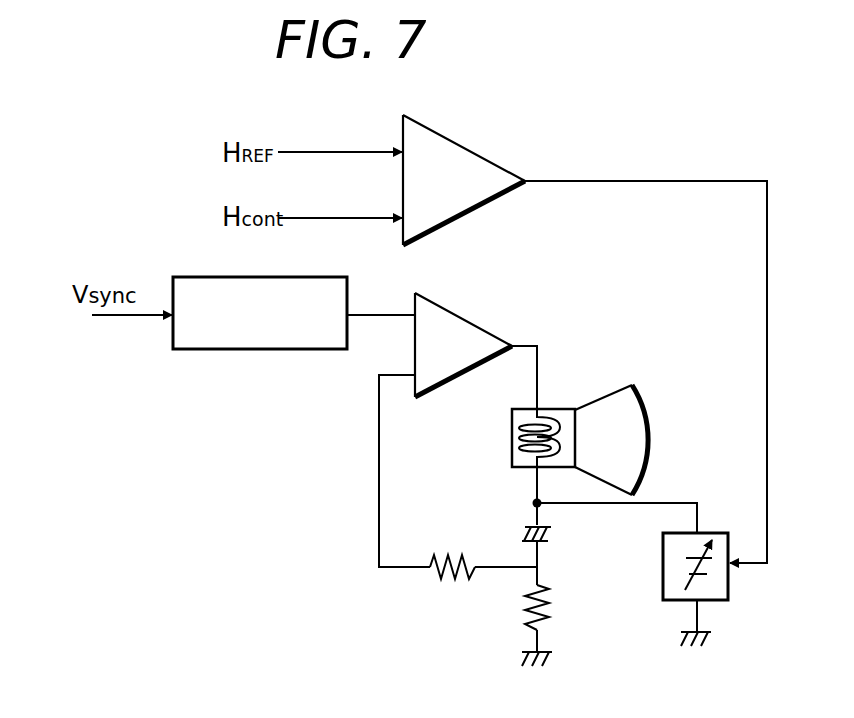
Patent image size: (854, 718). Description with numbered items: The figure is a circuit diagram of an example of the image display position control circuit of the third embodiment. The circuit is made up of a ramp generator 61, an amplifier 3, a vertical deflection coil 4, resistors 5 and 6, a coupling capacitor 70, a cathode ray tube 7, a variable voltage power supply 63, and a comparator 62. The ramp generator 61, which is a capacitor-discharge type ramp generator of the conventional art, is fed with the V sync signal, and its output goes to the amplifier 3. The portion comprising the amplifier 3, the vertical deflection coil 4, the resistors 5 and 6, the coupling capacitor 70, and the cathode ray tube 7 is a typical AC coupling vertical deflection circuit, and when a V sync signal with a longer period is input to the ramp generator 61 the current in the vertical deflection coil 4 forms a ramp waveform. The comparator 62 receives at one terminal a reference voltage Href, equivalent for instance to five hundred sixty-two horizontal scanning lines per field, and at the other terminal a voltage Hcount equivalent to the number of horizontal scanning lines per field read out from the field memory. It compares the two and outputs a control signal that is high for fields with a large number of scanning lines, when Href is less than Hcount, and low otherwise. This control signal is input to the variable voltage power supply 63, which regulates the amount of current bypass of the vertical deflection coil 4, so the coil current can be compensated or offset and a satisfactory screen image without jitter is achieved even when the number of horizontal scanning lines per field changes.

The comparator 62 is at (480, 153).
The ramp generator 61 is at (328, 277).
The amplifier 3 is at (470, 318).
The vertical deflection coil 4 is at (520, 440).
The cathode ray tube 7 is at (637, 393).
The coupling capacitor 70 is at (528, 528).
The variable voltage power supply 63 is at (663, 540).
The resistor 6 is at (455, 578).
The resistor 5 is at (548, 603).